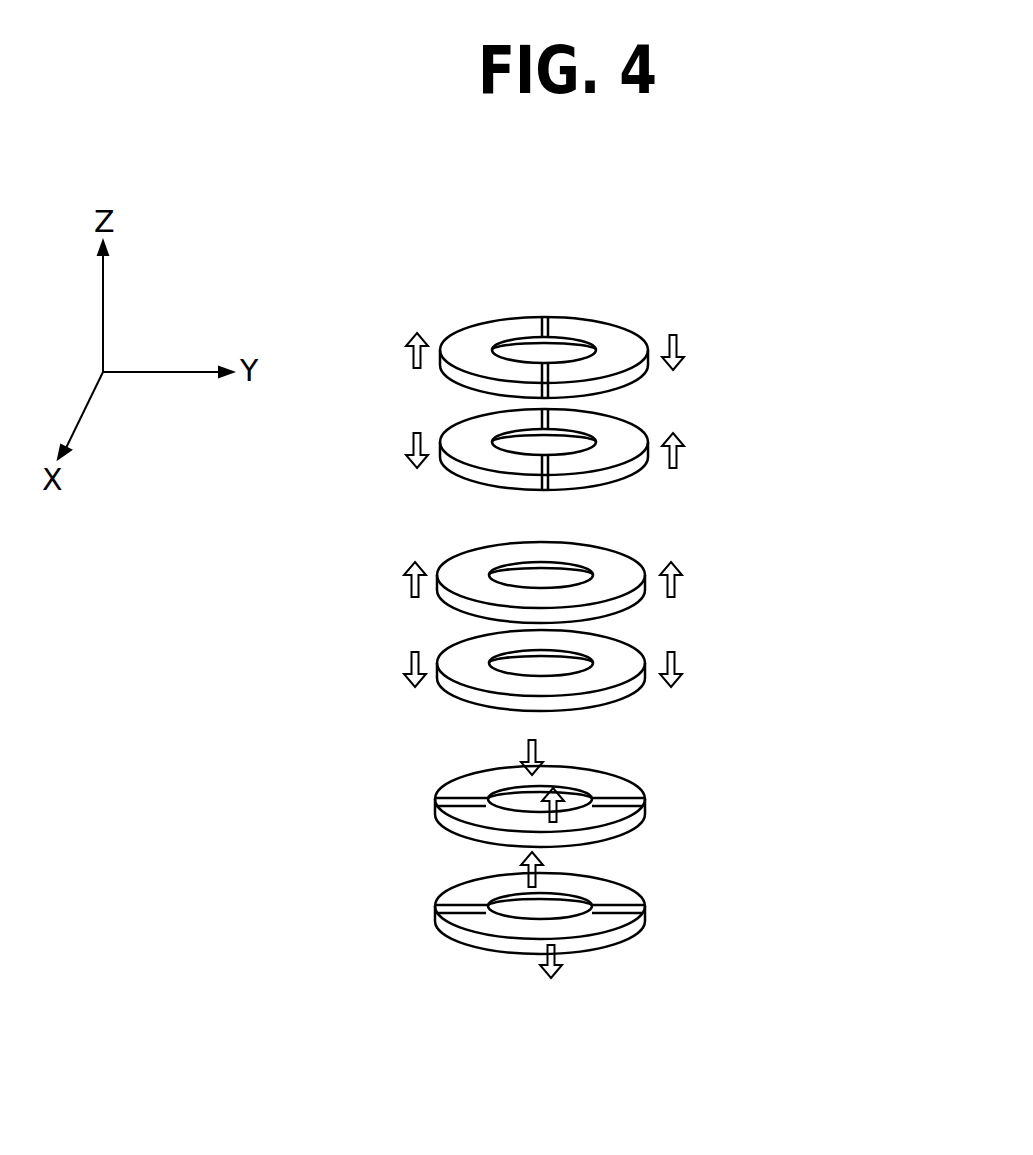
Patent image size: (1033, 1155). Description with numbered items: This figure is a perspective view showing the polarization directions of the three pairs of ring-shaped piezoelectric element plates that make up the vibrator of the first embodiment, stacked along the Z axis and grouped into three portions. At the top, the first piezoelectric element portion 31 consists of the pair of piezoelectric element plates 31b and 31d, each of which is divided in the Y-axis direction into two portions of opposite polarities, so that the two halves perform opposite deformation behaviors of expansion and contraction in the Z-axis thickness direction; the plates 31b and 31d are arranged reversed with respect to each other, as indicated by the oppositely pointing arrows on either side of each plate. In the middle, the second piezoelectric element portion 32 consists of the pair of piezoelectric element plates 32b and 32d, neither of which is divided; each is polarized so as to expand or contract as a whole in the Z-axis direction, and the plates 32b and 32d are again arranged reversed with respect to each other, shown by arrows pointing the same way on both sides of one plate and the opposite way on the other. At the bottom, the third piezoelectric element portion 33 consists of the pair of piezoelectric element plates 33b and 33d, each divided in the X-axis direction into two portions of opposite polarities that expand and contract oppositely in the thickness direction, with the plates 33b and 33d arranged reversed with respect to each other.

The first piezoelectric element portion 31 is at (700, 305).
The piezoelectric element plate 31b is at (447, 335).
The piezoelectric element plate 31d is at (447, 432).
The second piezoelectric element portion 32 is at (700, 527).
The piezoelectric element plate 32b is at (463, 552).
The piezoelectric element plate 32d is at (465, 698).
The third piezoelectric element portion 33 is at (700, 762).
The piezoelectric element plate 33b is at (443, 825).
The piezoelectric element plate 33d is at (443, 932).